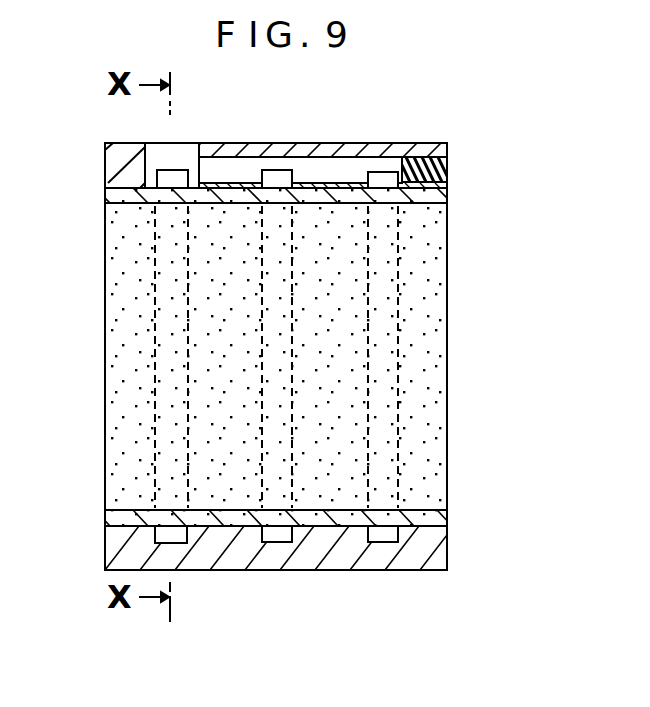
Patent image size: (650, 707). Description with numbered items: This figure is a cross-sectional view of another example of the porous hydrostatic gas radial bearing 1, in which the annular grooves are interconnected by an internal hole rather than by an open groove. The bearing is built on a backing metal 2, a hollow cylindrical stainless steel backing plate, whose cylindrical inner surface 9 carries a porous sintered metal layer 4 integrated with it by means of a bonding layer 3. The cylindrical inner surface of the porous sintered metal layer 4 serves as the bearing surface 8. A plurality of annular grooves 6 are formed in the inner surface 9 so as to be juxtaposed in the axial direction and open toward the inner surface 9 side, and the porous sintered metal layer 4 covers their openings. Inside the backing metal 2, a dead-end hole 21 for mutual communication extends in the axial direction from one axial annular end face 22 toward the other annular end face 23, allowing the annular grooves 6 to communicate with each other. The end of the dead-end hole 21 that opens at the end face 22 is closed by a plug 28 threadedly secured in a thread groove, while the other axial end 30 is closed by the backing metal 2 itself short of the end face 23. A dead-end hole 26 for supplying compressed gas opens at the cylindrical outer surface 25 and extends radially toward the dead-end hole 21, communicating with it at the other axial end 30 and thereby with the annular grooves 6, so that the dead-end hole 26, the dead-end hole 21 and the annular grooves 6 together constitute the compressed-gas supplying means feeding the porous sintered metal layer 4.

The porous hydrostatic gas radial bearing 1 is at (468, 129).
The backing metal 2 is at (108, 170).
The bonding layer 3 is at (105, 208).
The porous sintered metal layer 4 is at (450, 520).
The annular grooves 6 is at (170, 175).
The bearing surface 8 is at (425, 315).
The inner surface 9 is at (122, 512).
The dead-end hole for mutual communication 21 is at (320, 167).
The axial annular end face 22 is at (448, 388).
The other annular end face 23 is at (105, 403).
The cylindrical outer surface 25 is at (393, 142).
The dead-end hole for supplying compressed gas 26 is at (147, 141).
The plug 28 is at (448, 168).
The other axial end 30 is at (207, 163).